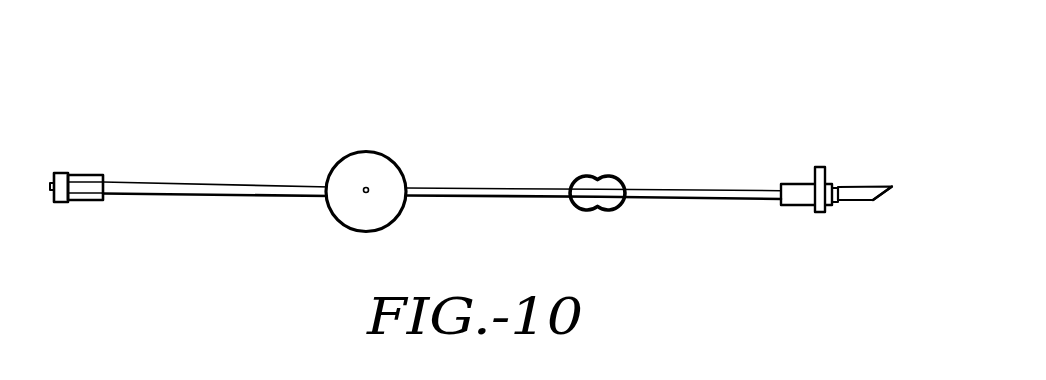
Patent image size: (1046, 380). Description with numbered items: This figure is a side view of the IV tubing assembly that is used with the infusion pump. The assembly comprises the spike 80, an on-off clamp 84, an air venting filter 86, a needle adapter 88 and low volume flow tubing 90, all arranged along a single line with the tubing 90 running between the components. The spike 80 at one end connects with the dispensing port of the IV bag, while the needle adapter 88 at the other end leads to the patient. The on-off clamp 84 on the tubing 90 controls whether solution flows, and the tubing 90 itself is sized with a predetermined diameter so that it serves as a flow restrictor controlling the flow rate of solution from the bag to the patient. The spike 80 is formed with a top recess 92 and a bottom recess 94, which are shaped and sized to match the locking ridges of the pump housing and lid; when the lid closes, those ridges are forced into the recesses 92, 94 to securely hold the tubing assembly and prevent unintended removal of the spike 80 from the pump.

The spike 80 is at (819, 150).
The on-off clamp 84 is at (605, 176).
The air venting filter 86 is at (367, 150).
The needle adapter 88 is at (63, 172).
The low volume flow tubing 90 is at (697, 188).
The top recess 92 is at (860, 187).
The bottom recess 94 is at (860, 203).